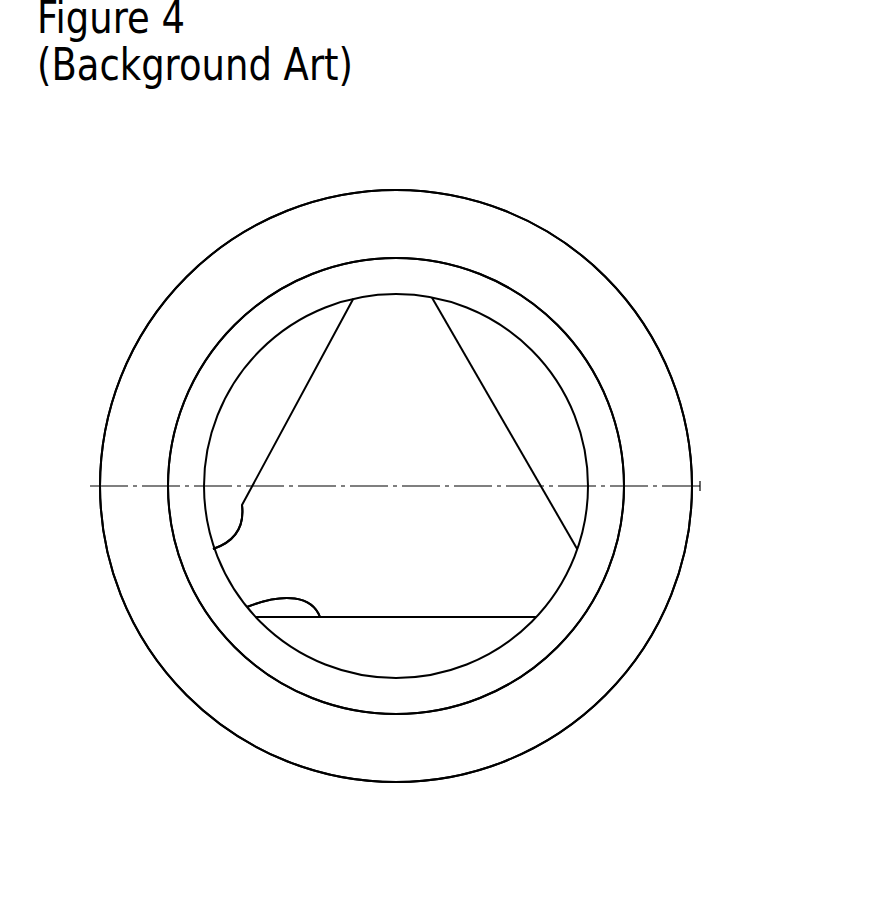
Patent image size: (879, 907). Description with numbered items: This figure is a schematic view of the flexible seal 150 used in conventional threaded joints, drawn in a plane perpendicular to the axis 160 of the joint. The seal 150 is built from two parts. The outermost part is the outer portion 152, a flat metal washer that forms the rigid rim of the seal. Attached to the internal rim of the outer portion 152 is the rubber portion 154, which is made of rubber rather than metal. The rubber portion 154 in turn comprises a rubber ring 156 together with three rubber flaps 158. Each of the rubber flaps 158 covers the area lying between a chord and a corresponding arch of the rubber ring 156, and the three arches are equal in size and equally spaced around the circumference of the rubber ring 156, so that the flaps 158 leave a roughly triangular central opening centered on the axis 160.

The seal 150 is at (158, 194).
The outer portion 152 is at (590, 310).
The rubber portion 154 is at (545, 427).
The rubber ring 156 is at (568, 602).
The rubber flaps 158 is at (503, 420).
The axis 160 is at (413, 454).